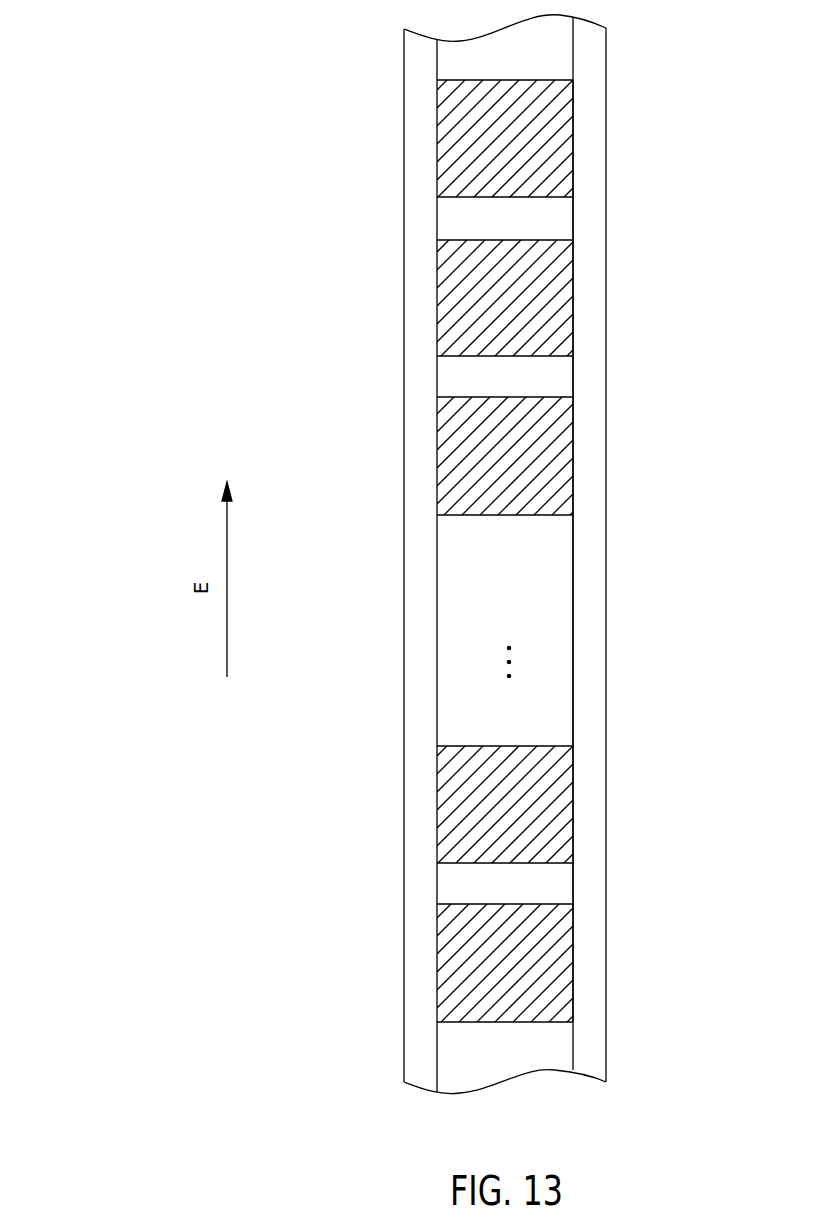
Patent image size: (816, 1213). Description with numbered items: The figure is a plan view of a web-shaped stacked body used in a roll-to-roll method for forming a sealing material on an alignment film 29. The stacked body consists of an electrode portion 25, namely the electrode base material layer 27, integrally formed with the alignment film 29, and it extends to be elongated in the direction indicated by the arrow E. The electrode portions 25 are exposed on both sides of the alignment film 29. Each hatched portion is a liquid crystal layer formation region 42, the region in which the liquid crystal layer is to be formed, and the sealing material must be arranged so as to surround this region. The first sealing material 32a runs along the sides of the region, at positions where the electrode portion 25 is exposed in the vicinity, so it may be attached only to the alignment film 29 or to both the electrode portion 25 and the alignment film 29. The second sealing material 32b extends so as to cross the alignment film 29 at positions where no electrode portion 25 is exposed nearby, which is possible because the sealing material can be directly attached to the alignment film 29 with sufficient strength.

The electrode portion 25 is at (592, 572).
The electrode base material layer 27 is at (418, 570).
The alignment film 29 is at (549, 655).
The first sealing material 32a is at (438, 139).
The second sealing material 32b is at (543, 80).
The liquid crystal layer formation region 42 is at (457, 105).